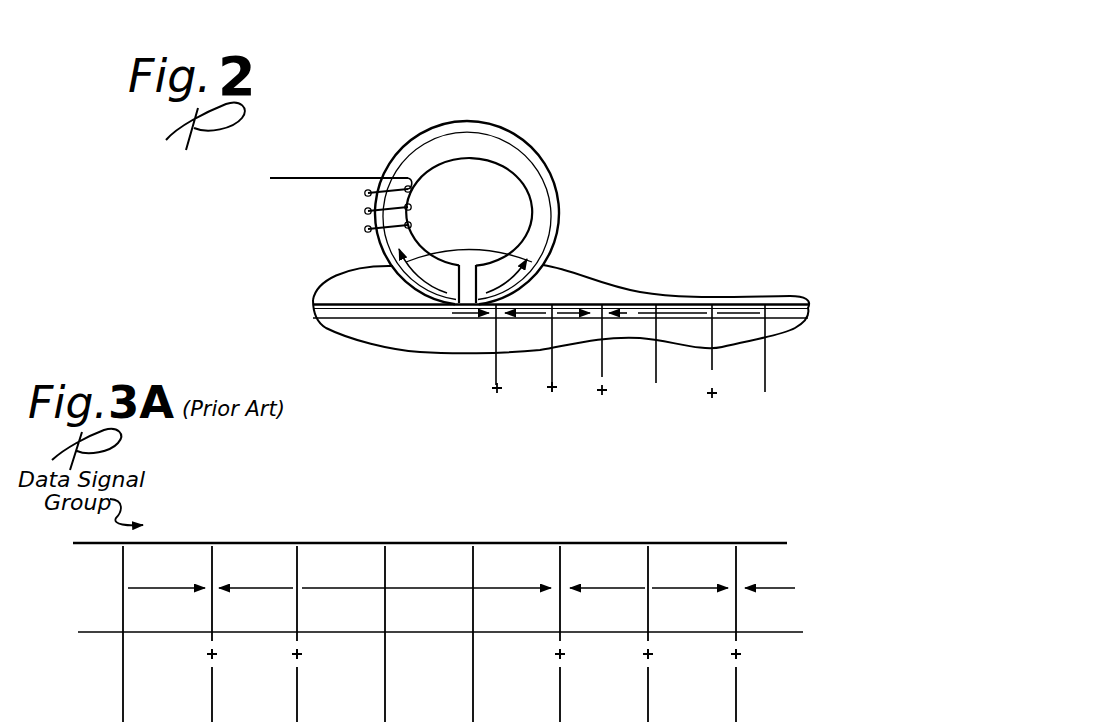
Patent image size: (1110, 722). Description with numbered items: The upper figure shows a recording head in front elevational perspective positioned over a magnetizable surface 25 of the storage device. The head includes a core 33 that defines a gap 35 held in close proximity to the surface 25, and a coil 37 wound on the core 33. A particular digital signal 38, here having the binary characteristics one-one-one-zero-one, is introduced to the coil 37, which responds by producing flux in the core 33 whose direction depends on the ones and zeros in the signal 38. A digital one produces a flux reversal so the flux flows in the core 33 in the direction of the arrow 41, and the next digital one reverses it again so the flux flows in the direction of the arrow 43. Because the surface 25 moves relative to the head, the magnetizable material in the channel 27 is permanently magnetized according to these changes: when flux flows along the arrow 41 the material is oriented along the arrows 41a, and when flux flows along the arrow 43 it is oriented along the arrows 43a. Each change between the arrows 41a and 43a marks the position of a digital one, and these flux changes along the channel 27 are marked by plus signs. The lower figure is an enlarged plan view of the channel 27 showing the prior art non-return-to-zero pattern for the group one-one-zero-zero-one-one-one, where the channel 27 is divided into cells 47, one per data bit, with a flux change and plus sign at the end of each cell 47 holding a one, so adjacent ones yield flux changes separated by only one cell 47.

In FIG. 2, the magnetizable surface 25 is at (597, 283).
In FIG. 2, the channel 27 is at (311, 313).
In FIG. 3A, the channel 27 is at (102, 581).
In FIG. 2, the core 33 is at (519, 166).
In FIG. 2, the gap 35 is at (467, 262).
In FIG. 2, the coil 37 is at (380, 198).
In FIG. 2, the digital signal 38 is at (287, 147).
In FIG. 2, the arrow 41 is at (497, 272).
In FIG. 2, the arrows 41a is at (465, 318).
In FIG. 2, the arrow 43 is at (414, 262).
In FIG. 2, the arrows 43a is at (524, 304).
In FIG. 3A, the cells 47 is at (335, 509).